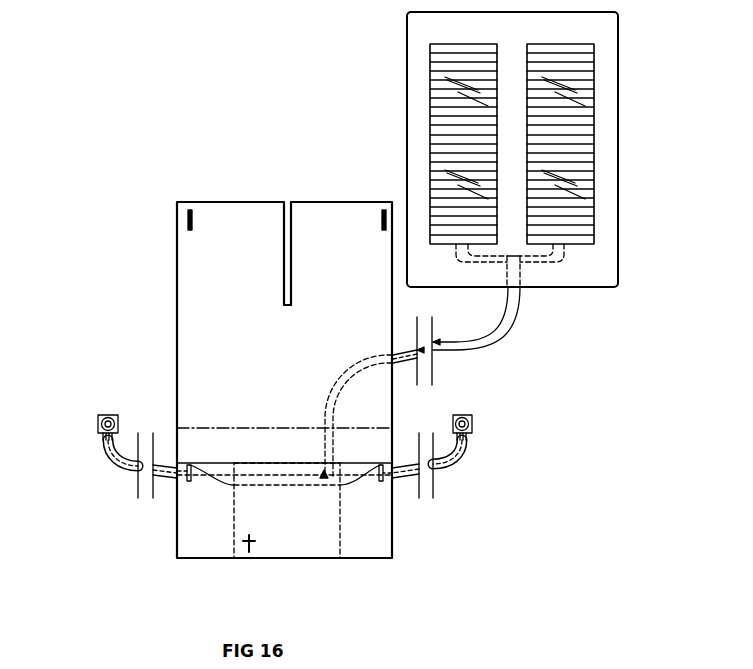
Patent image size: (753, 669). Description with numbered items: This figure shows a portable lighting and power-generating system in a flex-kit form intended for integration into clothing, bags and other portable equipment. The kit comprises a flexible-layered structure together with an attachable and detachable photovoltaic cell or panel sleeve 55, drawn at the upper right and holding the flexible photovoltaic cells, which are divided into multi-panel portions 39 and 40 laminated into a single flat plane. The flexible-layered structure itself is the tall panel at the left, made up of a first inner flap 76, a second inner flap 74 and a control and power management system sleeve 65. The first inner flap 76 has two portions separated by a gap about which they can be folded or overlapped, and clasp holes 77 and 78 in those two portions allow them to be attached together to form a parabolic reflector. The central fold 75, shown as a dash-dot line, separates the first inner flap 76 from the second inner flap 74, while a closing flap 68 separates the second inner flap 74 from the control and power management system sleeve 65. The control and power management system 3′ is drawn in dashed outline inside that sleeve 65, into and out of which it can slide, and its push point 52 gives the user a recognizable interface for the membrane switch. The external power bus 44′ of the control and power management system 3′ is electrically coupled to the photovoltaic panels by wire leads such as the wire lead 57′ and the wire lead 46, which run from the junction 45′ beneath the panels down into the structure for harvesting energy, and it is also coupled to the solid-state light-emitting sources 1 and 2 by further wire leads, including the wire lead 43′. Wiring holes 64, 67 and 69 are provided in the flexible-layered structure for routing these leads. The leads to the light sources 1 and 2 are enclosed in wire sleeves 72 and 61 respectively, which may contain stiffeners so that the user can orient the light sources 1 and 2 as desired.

The solid-state light-emitting source 1 is at (98, 424).
The solid-state light-emitting source 2 is at (472, 424).
The control and power management system 3′ is at (276, 540).
The photovoltaic multi-panel portion 39 is at (575, 62).
The photovoltaic multi-panel portion 40 is at (448, 67).
The wire lead 43′ is at (125, 462).
The external power bus 44′ is at (448, 461).
The connection 45′ is at (530, 258).
The wire lead 46 is at (460, 341).
The push point 52 is at (250, 552).
The photovoltaic cell or panel sleeve 55 is at (418, 117).
The wire lead 57′ is at (513, 264).
The wire sleeve 61 is at (462, 447).
The wiring hole 64 is at (383, 483).
The control and power management system sleeve 65 is at (375, 538).
The wiring hole 67 is at (314, 483).
The closing flap 68 is at (230, 470).
The wiring hole 69 is at (190, 483).
The wire sleeve 72 is at (110, 448).
The second inner flap 74 is at (195, 447).
The central fold 75 is at (290, 427).
The first inner flap 76 is at (215, 310).
The clasp hole 77 is at (188, 220).
The clasp hole 78 is at (382, 217).